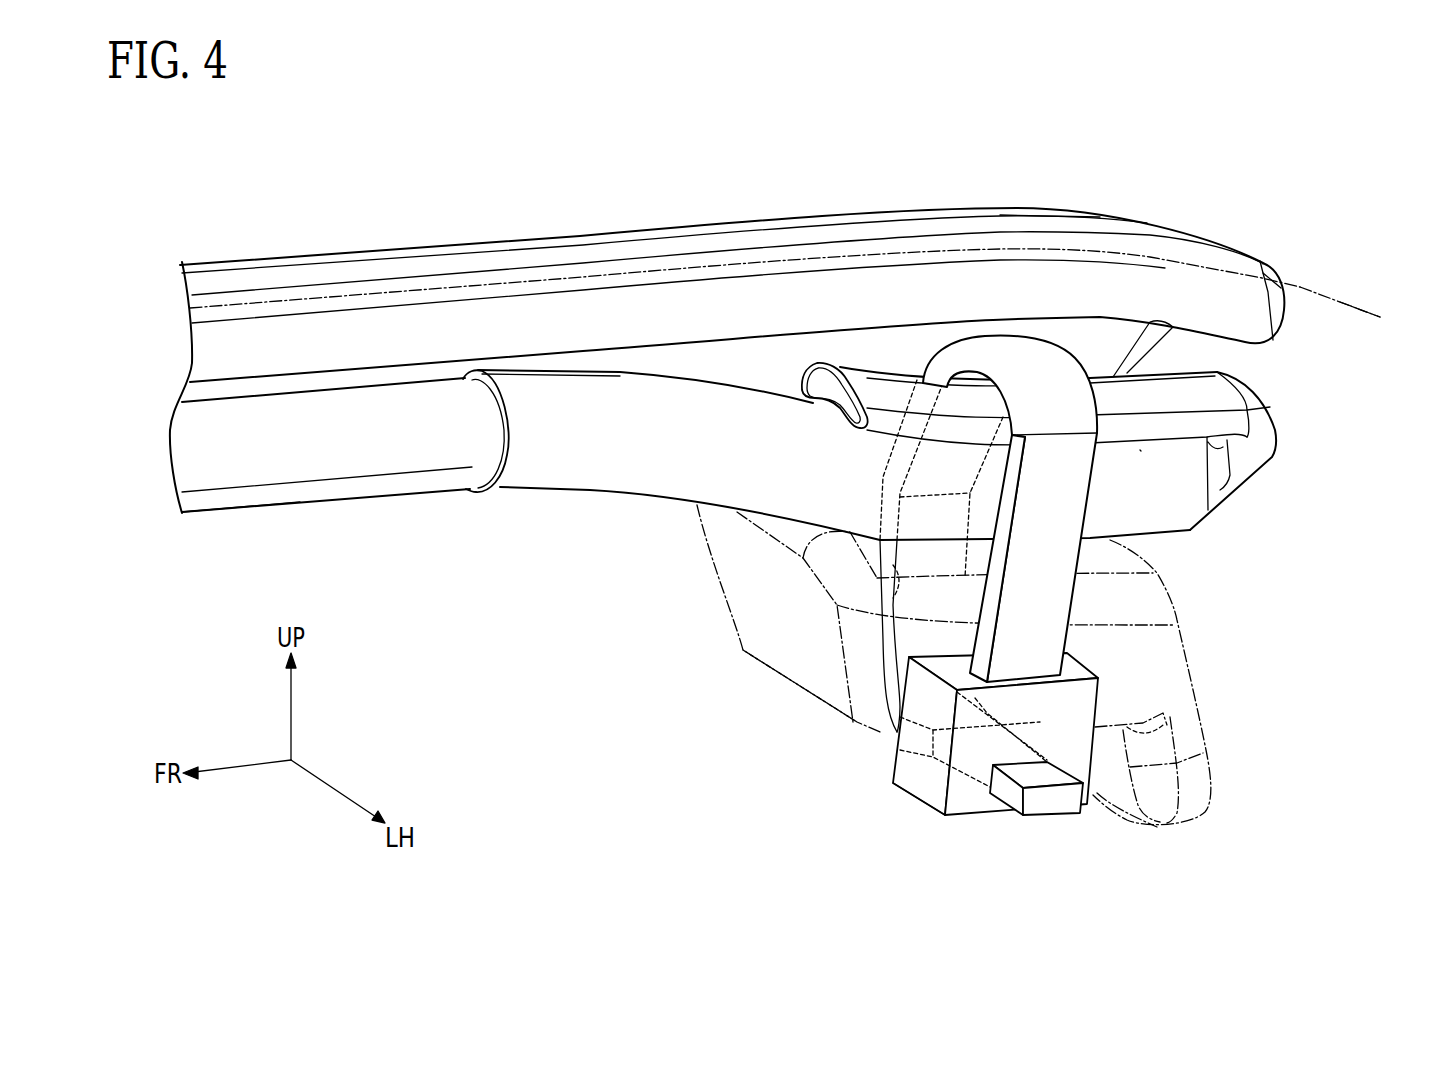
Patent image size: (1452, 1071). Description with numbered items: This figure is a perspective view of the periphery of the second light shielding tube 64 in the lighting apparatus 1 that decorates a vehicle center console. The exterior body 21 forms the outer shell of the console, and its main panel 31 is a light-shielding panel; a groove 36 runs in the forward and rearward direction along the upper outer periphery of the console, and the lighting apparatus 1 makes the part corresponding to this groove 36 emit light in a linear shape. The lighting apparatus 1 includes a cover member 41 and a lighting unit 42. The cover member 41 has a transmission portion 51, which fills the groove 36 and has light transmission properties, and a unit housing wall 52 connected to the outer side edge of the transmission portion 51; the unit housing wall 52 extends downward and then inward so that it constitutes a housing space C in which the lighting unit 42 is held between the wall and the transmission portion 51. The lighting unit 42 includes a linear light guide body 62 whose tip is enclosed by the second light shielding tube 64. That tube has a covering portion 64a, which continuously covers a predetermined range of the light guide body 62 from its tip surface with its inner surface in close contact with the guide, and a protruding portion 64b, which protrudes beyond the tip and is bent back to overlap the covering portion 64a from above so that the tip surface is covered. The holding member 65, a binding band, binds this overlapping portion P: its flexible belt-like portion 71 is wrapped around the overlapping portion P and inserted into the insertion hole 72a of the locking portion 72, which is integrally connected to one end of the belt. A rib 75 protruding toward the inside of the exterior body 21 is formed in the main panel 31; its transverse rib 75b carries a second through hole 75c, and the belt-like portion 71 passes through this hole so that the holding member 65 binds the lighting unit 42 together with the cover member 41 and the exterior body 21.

The lighting apparatus 1 is at (1243, 220).
The exterior body 21 is at (1360, 309).
The main panel 31 is at (1330, 297).
The groove 36 is at (1043, 240).
The cover member 41 is at (937, 203).
The lighting unit 42 is at (252, 515).
The transmission portion 51 is at (593, 307).
The unit housing wall 52 is at (1127, 345).
The linear light guide body 62 is at (372, 452).
The second light shielding tube 64 is at (567, 495).
The covering portion 64a is at (662, 470).
The protruding portion 64b is at (870, 383).
The holding member 65 is at (1078, 600).
The belt-like portion 71 is at (1053, 802).
The locking portion 72 is at (973, 805).
The insertion hole 72a is at (990, 783).
The rib 75 is at (954, 666).
The transverse rib 75b is at (817, 667).
The second through hole 75c is at (877, 608).
The housing space C is at (721, 362).
The overlapping portion P is at (1145, 452).